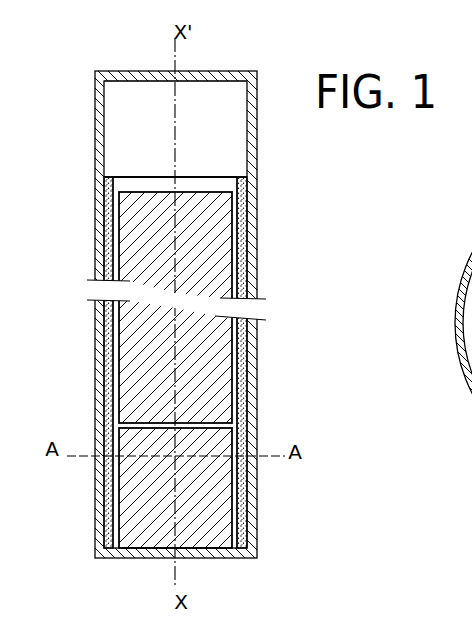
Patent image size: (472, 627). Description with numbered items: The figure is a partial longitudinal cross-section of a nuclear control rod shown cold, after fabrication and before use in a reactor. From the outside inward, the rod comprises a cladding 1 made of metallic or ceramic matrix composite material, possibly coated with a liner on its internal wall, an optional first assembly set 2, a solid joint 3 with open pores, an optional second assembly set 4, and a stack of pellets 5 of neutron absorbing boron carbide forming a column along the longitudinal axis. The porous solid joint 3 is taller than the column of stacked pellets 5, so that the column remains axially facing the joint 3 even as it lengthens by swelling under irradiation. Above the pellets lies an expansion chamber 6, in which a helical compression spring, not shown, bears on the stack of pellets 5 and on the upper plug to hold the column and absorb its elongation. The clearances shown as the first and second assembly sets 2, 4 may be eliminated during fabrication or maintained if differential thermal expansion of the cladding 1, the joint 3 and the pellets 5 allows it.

The cladding 1 is at (252, 205).
The first assembly set 2 is at (245, 262).
The solid joint with open pores 3 is at (255, 341).
The second assembly set 4 is at (240, 380).
The stack of pellets 5 is at (232, 510).
The expansion chamber 6 is at (135, 127).